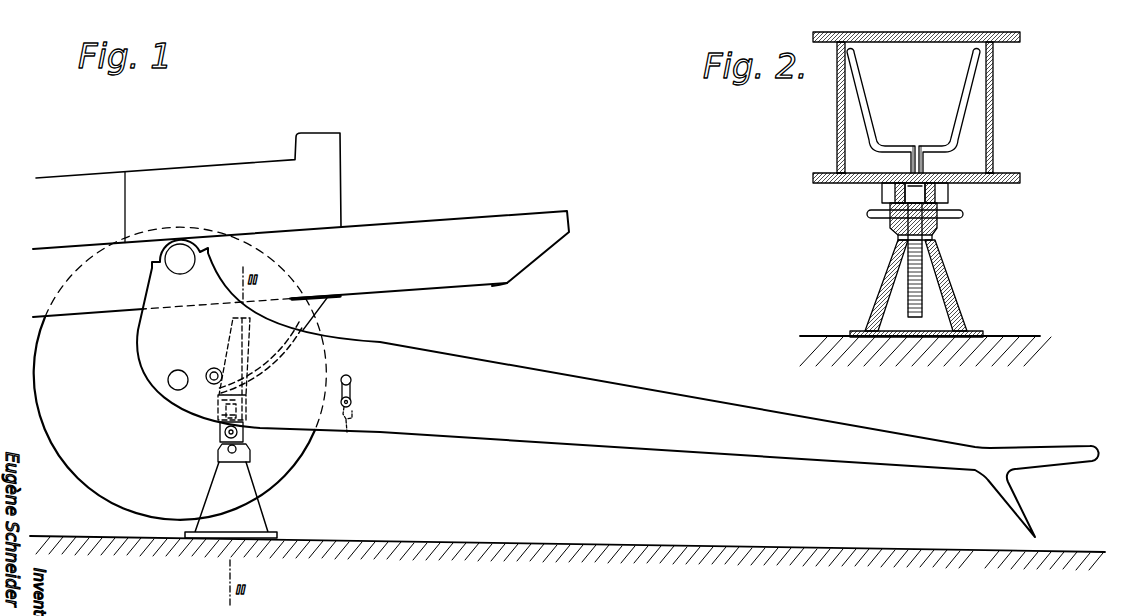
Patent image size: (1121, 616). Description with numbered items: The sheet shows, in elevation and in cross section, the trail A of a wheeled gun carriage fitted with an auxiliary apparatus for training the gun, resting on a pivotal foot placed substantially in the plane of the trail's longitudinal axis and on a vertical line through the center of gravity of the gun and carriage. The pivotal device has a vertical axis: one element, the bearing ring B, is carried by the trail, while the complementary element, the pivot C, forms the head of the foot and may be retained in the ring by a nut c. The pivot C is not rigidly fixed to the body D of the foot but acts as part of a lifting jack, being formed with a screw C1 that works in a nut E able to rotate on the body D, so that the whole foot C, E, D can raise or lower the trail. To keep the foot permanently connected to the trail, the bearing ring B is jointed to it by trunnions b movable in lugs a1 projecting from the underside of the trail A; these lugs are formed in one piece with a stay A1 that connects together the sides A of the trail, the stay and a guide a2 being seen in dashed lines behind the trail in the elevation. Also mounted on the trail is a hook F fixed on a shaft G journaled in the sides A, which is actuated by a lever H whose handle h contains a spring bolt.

In FIG. 1, the trail A is at (468, 368).
In FIG. 2, the trail A is at (838, 108).
In FIG. 1, the stay A1 is at (228, 323).
In FIG. 2, the stay A1 is at (862, 125).
In FIG. 1, the lugs a1 is at (242, 420).
In FIG. 2, the lugs a1 is at (988, 205).
In FIG. 1, the guide rail a2 is at (298, 348).
In FIG. 1, the trunnions b is at (222, 431).
In FIG. 2, the trunnions b is at (840, 168).
In FIG. 1, the bearing ring B is at (243, 433).
In FIG. 2, the bearing ring B is at (925, 205).
In FIG. 2, the nut c is at (918, 160).
In FIG. 2, the pivot C is at (882, 212).
In FIG. 2, the screw C1 is at (905, 292).
In FIG. 1, the nut E is at (221, 451).
In FIG. 2, the nut E is at (896, 226).
In FIG. 1, the body of the foot D is at (215, 496).
In FIG. 2, the body of the foot D is at (948, 298).
In FIG. 1, the handle h is at (351, 383).
In FIG. 1, the lever H is at (352, 395).
In FIG. 1, the shaft G is at (352, 410).
In FIG. 1, the hook F is at (346, 418).